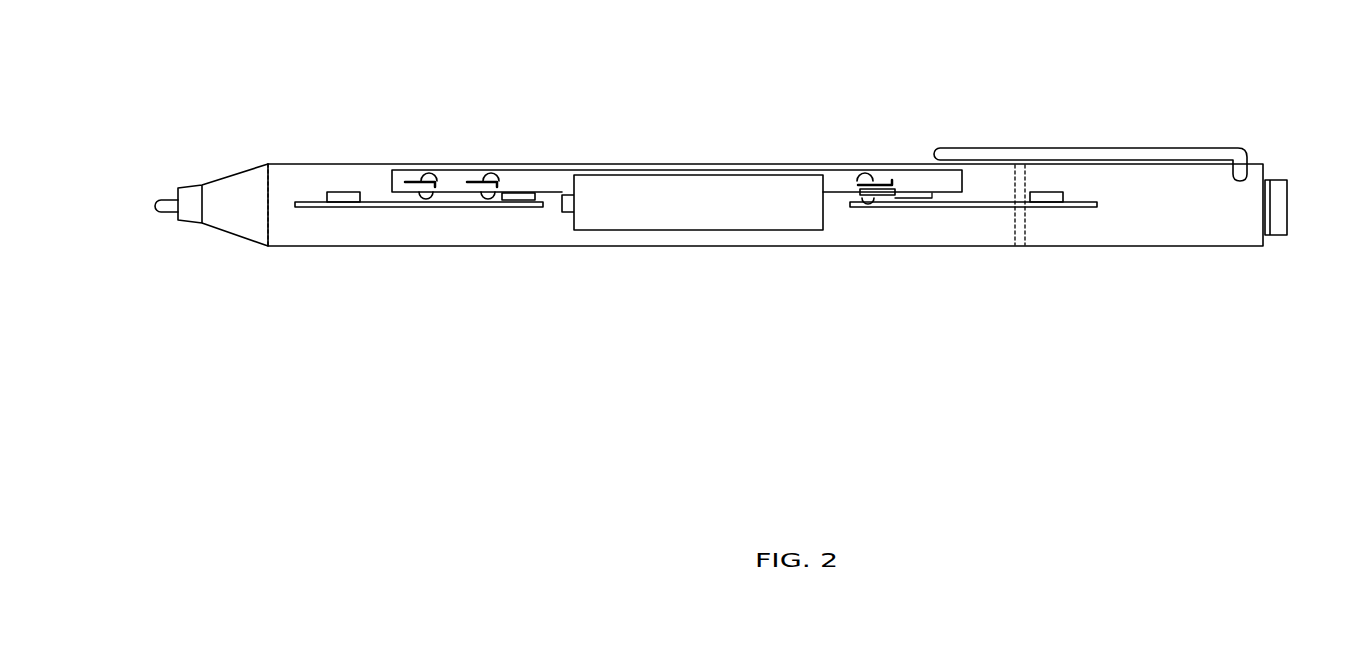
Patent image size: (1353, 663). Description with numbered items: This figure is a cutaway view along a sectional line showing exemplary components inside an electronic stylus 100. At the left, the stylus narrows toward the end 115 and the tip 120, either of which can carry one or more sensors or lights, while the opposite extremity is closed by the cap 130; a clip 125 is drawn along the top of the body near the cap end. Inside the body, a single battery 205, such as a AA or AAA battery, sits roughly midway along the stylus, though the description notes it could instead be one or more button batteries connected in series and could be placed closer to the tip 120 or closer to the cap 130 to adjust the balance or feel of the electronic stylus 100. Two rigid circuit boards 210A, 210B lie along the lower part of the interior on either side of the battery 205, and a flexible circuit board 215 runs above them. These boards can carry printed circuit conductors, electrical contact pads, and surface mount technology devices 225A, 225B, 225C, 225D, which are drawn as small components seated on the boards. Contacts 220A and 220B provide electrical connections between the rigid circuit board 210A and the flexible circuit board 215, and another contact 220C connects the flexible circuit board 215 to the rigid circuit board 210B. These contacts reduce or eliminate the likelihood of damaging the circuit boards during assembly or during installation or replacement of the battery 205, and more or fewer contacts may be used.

The electronic stylus 100 is at (677, 86).
The end 115 is at (218, 170).
The tip 120 is at (162, 192).
The clip 125 is at (1197, 145).
The cap 130 is at (1280, 178).
The battery 205 is at (715, 211).
The rigid circuit board 210A is at (392, 207).
The rigid circuit board 210B is at (985, 207).
The flexible circuit board 215 is at (385, 181).
The contact 220A is at (408, 177).
The contact 220B is at (470, 177).
The contact 220C is at (892, 176).
The surface mount technology (SMT) device 225A is at (347, 190).
The surface mount technology (SMT) device 225B is at (540, 197).
The surface mount technology (SMT) device 225C is at (900, 199).
The surface mount technology (SMT) device 225D is at (1065, 195).